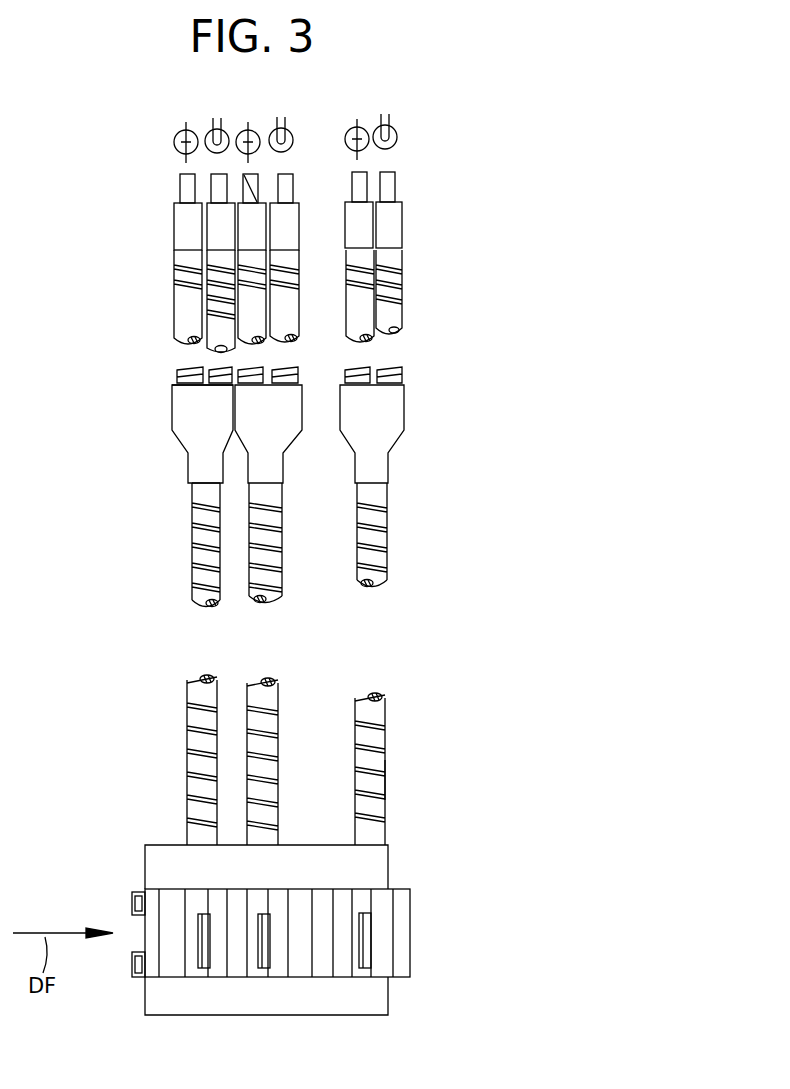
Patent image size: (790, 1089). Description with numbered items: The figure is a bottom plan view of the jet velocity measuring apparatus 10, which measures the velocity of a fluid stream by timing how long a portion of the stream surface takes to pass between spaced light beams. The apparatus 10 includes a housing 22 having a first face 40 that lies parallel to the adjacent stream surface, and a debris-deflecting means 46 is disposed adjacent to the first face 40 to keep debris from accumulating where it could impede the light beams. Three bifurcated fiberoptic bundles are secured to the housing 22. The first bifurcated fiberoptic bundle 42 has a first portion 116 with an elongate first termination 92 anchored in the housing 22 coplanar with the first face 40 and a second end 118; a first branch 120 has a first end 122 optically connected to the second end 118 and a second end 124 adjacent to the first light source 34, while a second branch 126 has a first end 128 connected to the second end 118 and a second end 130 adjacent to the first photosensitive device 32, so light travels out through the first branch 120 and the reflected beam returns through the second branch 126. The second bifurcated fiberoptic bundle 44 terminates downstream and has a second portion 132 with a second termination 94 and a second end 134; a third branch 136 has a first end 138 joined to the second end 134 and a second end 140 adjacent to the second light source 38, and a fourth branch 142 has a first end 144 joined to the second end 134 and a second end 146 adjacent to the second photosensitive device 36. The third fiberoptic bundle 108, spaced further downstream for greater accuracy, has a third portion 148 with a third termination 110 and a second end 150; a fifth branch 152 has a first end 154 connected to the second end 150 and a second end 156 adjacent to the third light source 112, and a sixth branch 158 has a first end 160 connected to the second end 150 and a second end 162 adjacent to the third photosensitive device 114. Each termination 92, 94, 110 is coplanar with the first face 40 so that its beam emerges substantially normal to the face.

The jet velocity measuring apparatus 10 is at (410, 548).
The housing 22 is at (408, 853).
The first photosensitive device 32 is at (179, 133).
The first light source 34 is at (210, 132).
The second photosensitive device 36 is at (245, 131).
The second light source 38 is at (287, 130).
The first face 40 is at (320, 955).
The first bifurcated fiberoptic bundle 42 is at (165, 438).
The second bifurcated fiberoptic bundle 44 is at (298, 453).
The debris-deflecting means 46 is at (393, 925).
The first termination 92 is at (202, 952).
The second termination 94 is at (260, 945).
The third fiberoptic bundle 108 is at (398, 780).
The third termination 110 is at (363, 953).
The third light source 112 is at (397, 132).
The third photosensitive device 114 is at (353, 122).
The first portion 116 is at (197, 580).
The second end 118 is at (193, 488).
The first branch 120 is at (217, 272).
The first end 122 is at (215, 380).
The second end 124 is at (212, 180).
The second branch 126 is at (177, 298).
The first end 128 is at (195, 388).
The second end 130 is at (182, 183).
The second portion 132 is at (265, 693).
The second end 134 is at (272, 497).
The third branch 136 is at (292, 323).
The first end 138 is at (288, 382).
The second end 140 is at (287, 168).
The fourth branch 142 is at (257, 277).
The first end 144 is at (252, 363).
The second end 146 is at (266, 206).
The third portion 148 is at (377, 732).
The second end 150 is at (390, 473).
The fifth branch 152 is at (393, 277).
The first end 154 is at (402, 375).
The second end 156 is at (397, 182).
The sixth branch 158 is at (363, 255).
The first end 160 is at (367, 382).
The second end 162 is at (362, 172).